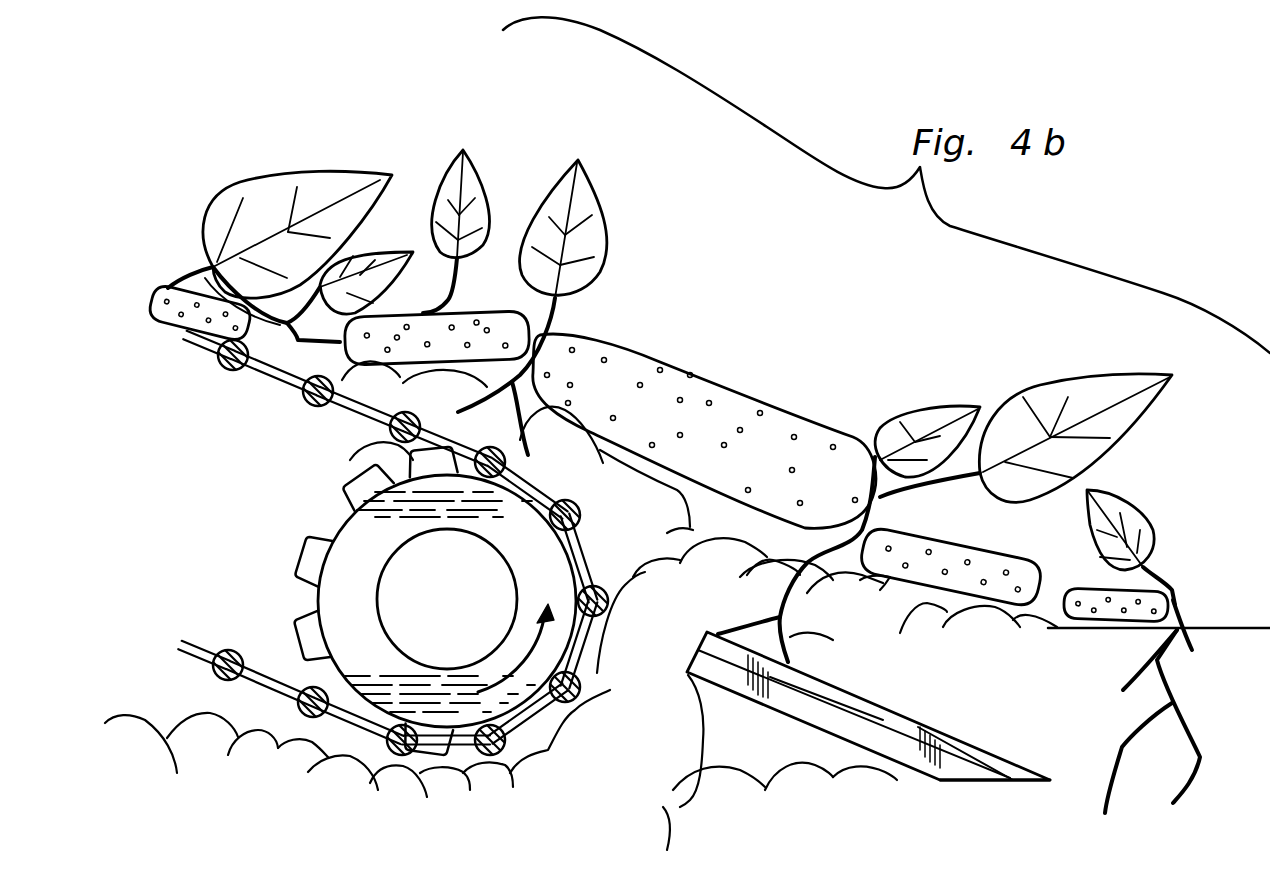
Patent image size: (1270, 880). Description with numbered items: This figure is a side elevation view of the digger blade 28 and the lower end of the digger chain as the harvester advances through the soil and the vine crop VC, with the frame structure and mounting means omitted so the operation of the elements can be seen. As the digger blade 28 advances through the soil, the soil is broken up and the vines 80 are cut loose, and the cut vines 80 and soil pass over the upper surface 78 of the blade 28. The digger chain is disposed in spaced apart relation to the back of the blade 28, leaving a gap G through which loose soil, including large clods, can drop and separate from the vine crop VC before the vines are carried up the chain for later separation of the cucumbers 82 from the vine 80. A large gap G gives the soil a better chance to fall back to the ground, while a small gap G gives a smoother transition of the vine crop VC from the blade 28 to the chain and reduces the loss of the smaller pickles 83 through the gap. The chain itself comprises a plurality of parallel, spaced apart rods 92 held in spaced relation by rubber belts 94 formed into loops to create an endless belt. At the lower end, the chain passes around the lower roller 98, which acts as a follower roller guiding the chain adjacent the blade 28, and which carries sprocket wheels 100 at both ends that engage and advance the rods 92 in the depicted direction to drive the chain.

The digger blade 28 is at (940, 780).
The upper surface 78 is at (958, 730).
The vines 80 is at (205, 267).
The cucumbers 82 is at (495, 305).
The pickles 83 is at (172, 290).
The rods 92 is at (216, 370).
The rubber belts 94 is at (248, 375).
The lower roller 98 is at (262, 594).
The sprocket wheels 100 is at (320, 543).
The vine crop VC is at (481, 150).
The gap G is at (634, 760).